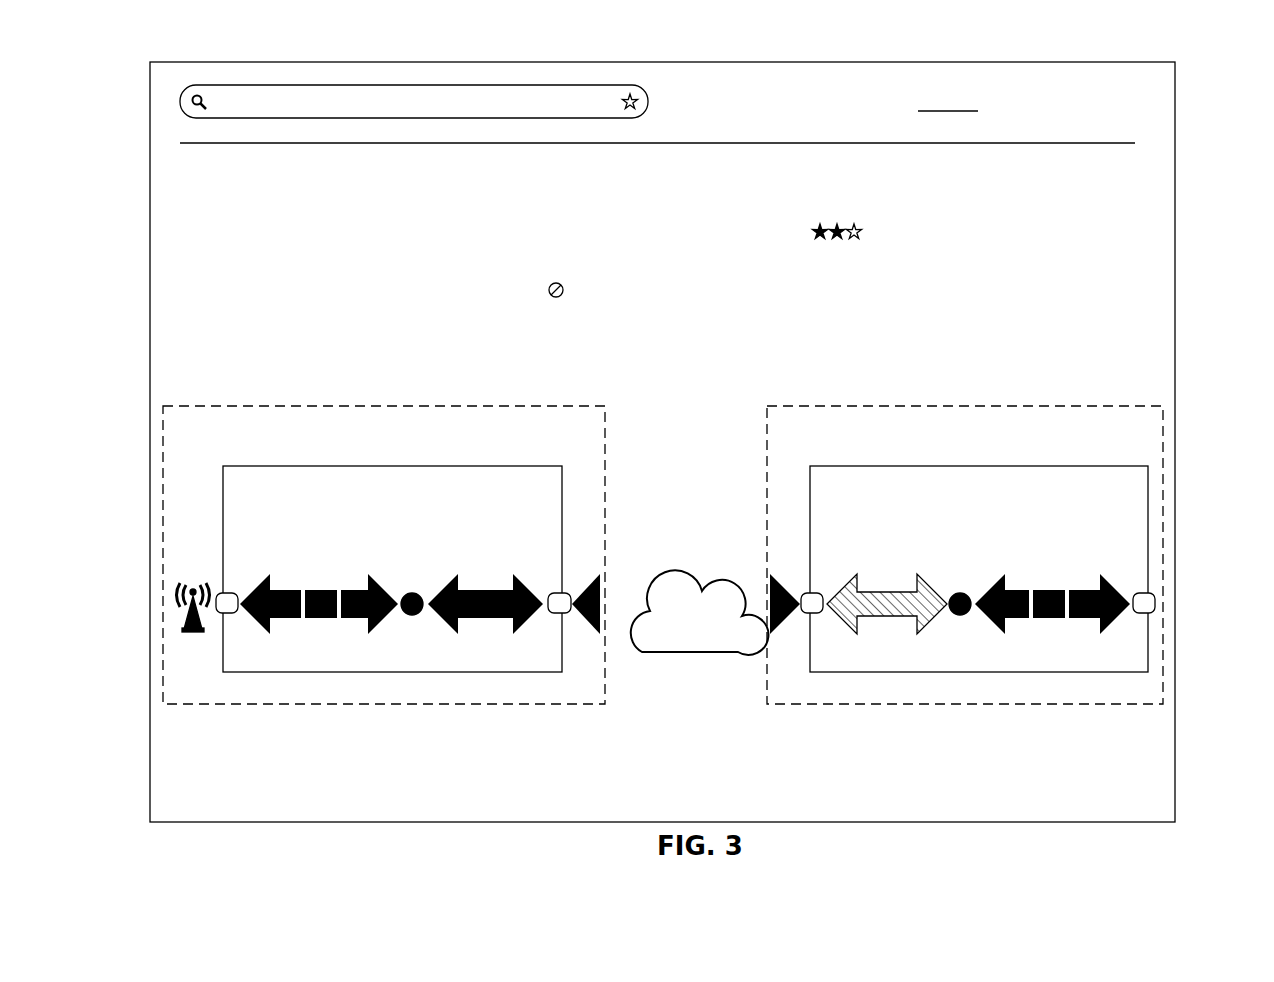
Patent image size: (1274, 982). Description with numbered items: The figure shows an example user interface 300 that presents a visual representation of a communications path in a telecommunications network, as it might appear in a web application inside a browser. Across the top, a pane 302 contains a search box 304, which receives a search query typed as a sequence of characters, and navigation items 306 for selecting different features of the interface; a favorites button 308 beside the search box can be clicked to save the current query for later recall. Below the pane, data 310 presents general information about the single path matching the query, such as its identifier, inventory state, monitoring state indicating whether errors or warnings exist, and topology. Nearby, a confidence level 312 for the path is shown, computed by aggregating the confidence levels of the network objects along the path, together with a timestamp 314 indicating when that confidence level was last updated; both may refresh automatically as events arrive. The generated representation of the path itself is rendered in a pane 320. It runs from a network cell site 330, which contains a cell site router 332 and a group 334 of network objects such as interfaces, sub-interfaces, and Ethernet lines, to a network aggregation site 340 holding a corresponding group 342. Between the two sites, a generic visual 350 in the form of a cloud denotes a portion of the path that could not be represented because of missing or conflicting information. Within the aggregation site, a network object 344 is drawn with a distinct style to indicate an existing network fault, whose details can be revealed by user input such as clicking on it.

The user interface screen 300 is at (1143, 48).
The pane 302 is at (1178, 62).
The search box 304 is at (414, 74).
The navigation items 306 is at (773, 84).
The favorites button 308 is at (638, 100).
The data 310 is at (372, 220).
The confidence level 312 is at (854, 227).
The timestamp 314 is at (942, 253).
The pane 320 is at (1178, 406).
The network cell site 330 is at (384, 548).
The cell site router 332 is at (192, 588).
The group of network objects 334 is at (408, 562).
The network aggregation site 340 is at (965, 548).
The group of network objects 342 is at (978, 562).
The network object 344 is at (888, 584).
The generic visual 350 is at (698, 563).